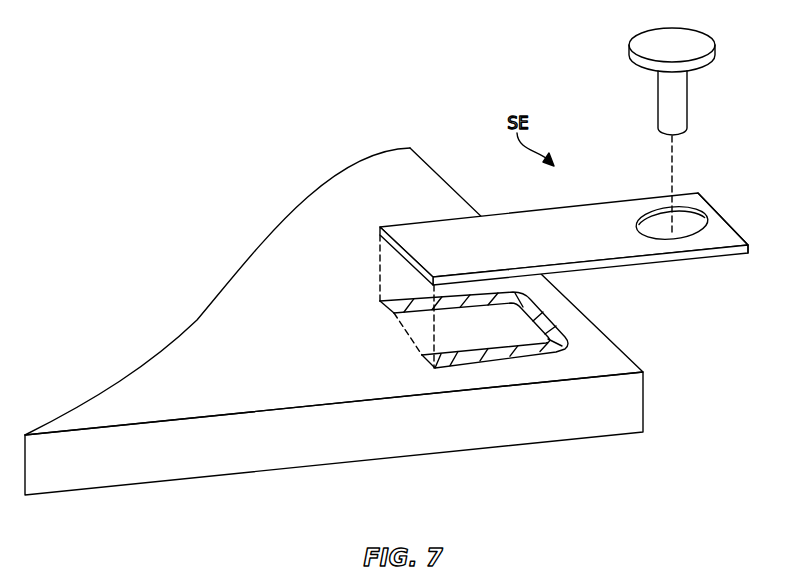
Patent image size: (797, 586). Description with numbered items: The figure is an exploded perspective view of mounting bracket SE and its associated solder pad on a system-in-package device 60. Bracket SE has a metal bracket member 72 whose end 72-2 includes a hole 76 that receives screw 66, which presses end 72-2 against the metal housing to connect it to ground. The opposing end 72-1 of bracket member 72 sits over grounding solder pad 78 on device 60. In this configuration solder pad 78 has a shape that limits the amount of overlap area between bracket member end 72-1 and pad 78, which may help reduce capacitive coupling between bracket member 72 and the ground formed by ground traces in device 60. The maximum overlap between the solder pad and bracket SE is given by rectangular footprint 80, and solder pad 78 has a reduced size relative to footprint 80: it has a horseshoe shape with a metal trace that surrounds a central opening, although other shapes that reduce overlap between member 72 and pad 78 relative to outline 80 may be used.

The device 60 is at (334, 330).
The screw 66 is at (682, 97).
The bracket member 72 is at (568, 228).
The end of bracket member 72-1 is at (425, 235).
The end of bracket member 72-2 is at (730, 240).
The hole 76 is at (684, 226).
The solder pad 78 is at (445, 357).
The rectangular footprint 80 is at (413, 338).